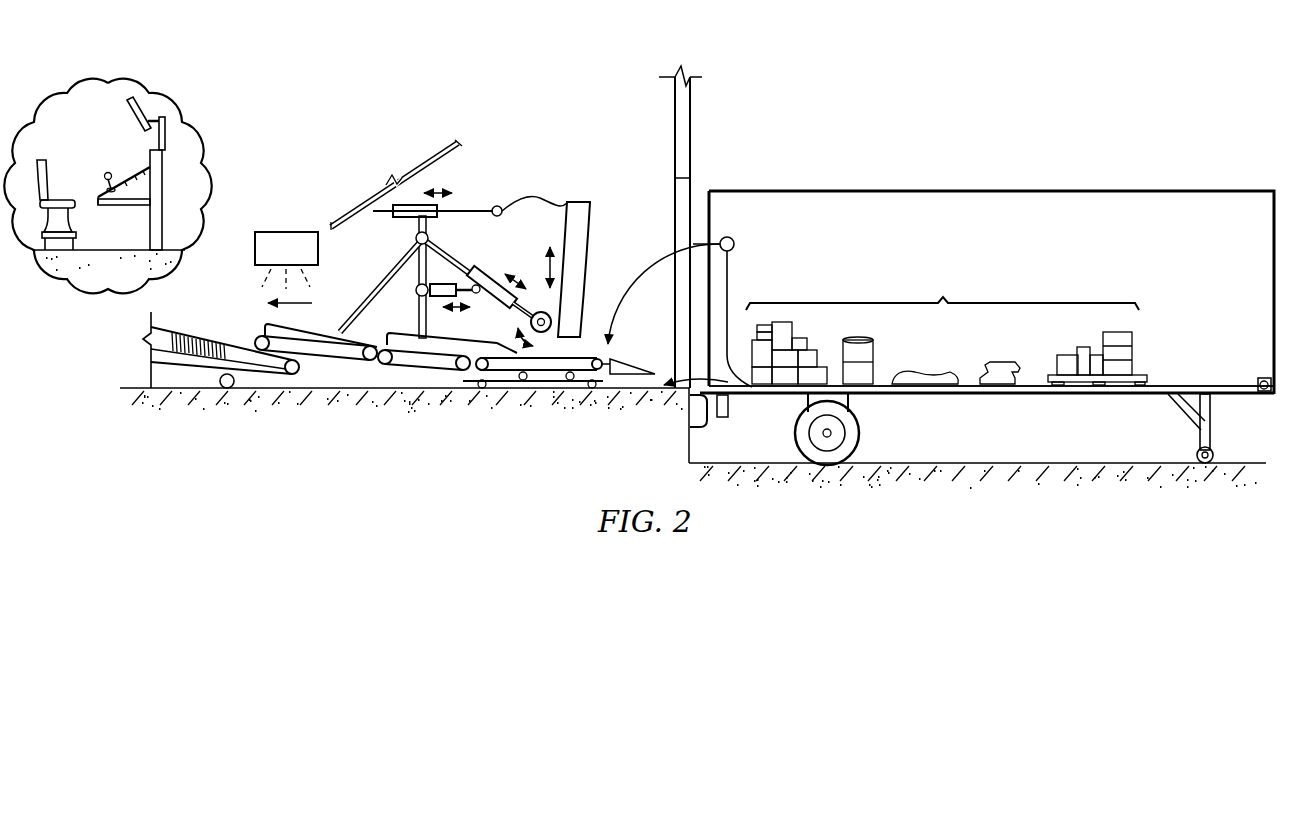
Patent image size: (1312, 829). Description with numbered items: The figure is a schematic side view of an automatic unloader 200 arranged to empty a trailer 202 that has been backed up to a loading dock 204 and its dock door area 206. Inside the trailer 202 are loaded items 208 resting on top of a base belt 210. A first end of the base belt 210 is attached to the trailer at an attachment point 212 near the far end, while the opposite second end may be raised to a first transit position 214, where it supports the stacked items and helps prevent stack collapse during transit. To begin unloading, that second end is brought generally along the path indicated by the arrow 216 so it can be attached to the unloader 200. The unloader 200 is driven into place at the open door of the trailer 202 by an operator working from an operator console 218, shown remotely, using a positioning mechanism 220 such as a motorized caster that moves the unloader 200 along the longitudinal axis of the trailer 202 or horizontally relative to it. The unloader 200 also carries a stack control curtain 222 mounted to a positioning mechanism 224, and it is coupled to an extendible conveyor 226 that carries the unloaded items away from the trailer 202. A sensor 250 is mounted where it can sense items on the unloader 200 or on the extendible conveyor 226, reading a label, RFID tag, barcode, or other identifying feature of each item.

The automatic unloader 200 is at (521, 121).
The trailer 202 is at (992, 190).
The loading dock 204 is at (705, 181).
The dock door area 206 is at (680, 224).
The loaded items 208 is at (946, 329).
The base belt 210 is at (1165, 381).
The attachment point 212 is at (1260, 377).
The first transit position 214 is at (742, 268).
The arrow 216 is at (648, 274).
The operator console 218 is at (87, 276).
The positioning mechanism 220 is at (503, 389).
The stack control curtain 222 is at (577, 200).
The positioning mechanism 224 is at (396, 185).
The extendible conveyor 226 is at (359, 373).
The sensor 250 is at (280, 229).